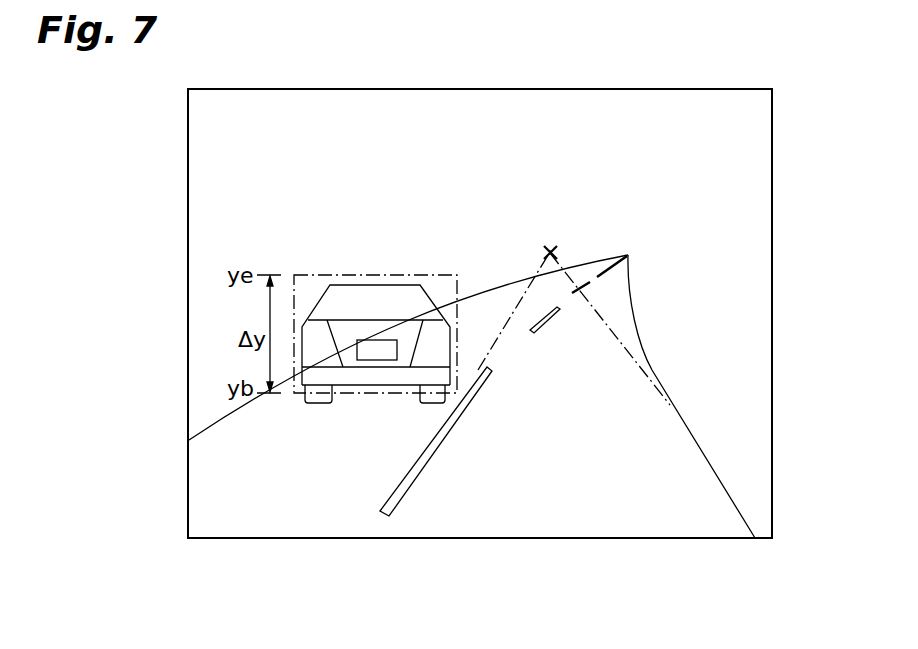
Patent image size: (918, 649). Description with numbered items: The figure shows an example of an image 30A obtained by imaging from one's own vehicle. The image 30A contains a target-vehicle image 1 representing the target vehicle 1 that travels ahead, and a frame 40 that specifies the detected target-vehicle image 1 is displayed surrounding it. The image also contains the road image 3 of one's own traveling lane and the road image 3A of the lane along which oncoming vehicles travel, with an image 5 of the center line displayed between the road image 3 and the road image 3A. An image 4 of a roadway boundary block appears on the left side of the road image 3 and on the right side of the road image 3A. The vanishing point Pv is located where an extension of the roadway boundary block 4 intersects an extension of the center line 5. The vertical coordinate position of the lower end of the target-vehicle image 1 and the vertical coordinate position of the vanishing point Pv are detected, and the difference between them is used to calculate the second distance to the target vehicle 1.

The target vehicle 1 is at (364, 275).
The road 3 is at (300, 505).
The road image of oncoming lane 3A is at (663, 510).
The roadway boundary block 4 is at (205, 432).
The center line 5 is at (442, 438).
The image 30A is at (760, 143).
The frame 40 is at (407, 273).
The vanishing point Pv is at (554, 235).